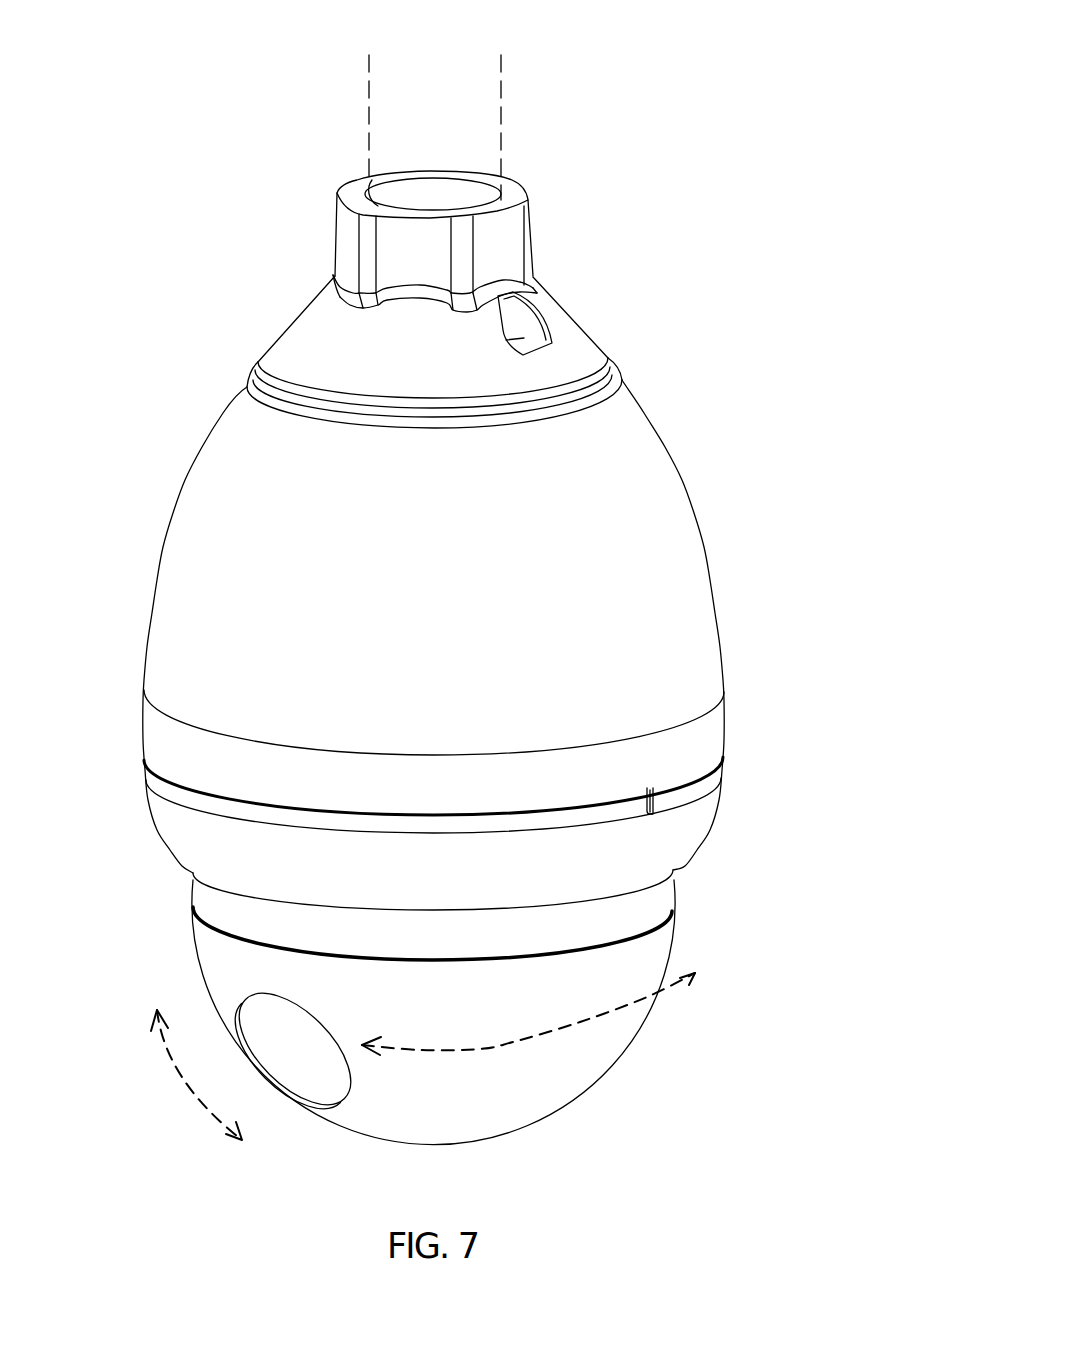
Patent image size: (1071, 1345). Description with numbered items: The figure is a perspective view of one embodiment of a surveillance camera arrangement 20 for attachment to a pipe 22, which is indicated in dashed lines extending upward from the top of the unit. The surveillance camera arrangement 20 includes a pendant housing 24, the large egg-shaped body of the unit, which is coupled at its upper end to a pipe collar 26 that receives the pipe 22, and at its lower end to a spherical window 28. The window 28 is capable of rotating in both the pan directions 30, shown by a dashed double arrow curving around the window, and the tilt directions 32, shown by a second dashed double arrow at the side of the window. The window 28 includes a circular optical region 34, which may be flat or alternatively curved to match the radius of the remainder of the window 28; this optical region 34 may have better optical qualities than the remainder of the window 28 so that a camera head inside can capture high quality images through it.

The surveillance camera arrangement 20 is at (761, 158).
The pipe 22 is at (503, 97).
The pendant housing 24 is at (478, 584).
The pipe collar 26 is at (350, 237).
The spherical window 28 is at (588, 1055).
The pan directions 30 is at (525, 1044).
The tilt directions 32 is at (183, 1070).
The circular optical region 34 is at (312, 1068).